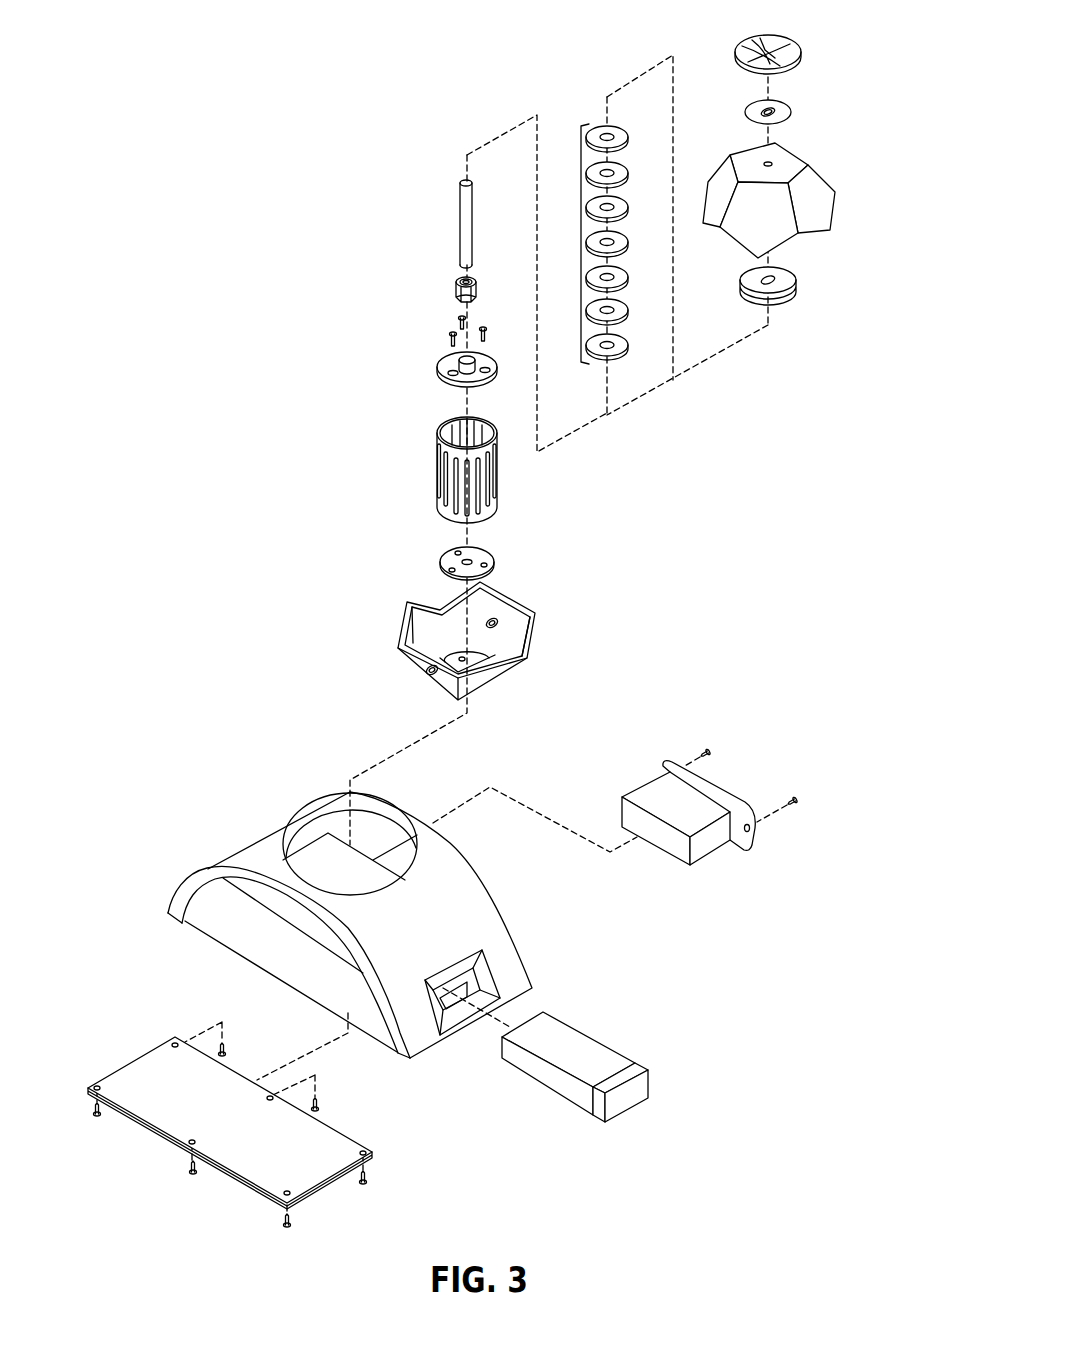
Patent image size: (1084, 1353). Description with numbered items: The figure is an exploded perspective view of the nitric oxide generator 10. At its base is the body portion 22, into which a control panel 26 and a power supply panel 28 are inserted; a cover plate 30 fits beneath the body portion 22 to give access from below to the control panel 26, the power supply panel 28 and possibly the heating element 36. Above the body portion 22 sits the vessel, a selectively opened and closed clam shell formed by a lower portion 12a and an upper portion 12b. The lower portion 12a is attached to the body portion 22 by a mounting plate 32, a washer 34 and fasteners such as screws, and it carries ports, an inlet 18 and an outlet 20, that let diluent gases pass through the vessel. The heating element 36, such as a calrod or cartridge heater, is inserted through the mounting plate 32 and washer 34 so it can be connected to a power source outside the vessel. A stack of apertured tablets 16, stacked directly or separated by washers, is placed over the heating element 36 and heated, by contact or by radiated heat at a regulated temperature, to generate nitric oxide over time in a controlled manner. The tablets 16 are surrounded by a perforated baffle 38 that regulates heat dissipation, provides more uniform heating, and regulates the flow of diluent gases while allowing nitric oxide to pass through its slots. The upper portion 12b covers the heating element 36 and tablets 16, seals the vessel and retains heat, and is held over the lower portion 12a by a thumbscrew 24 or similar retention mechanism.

The generator 10 is at (285, 128).
The lower portion 12a is at (484, 600).
The upper portion 12b is at (793, 160).
The tablets 16 is at (578, 240).
The inlet 18 is at (423, 678).
The outlet 20 is at (497, 613).
The body portion 22 is at (492, 922).
The thumbscrew 24 is at (793, 42).
The control panel 26 is at (620, 1103).
The power supply panel 28 is at (720, 798).
The cover plate 30 is at (263, 1180).
The mounting plate 32 is at (442, 366).
The washer 34 is at (490, 553).
The heating element 36 is at (461, 221).
The perforated baffle 38 is at (433, 511).